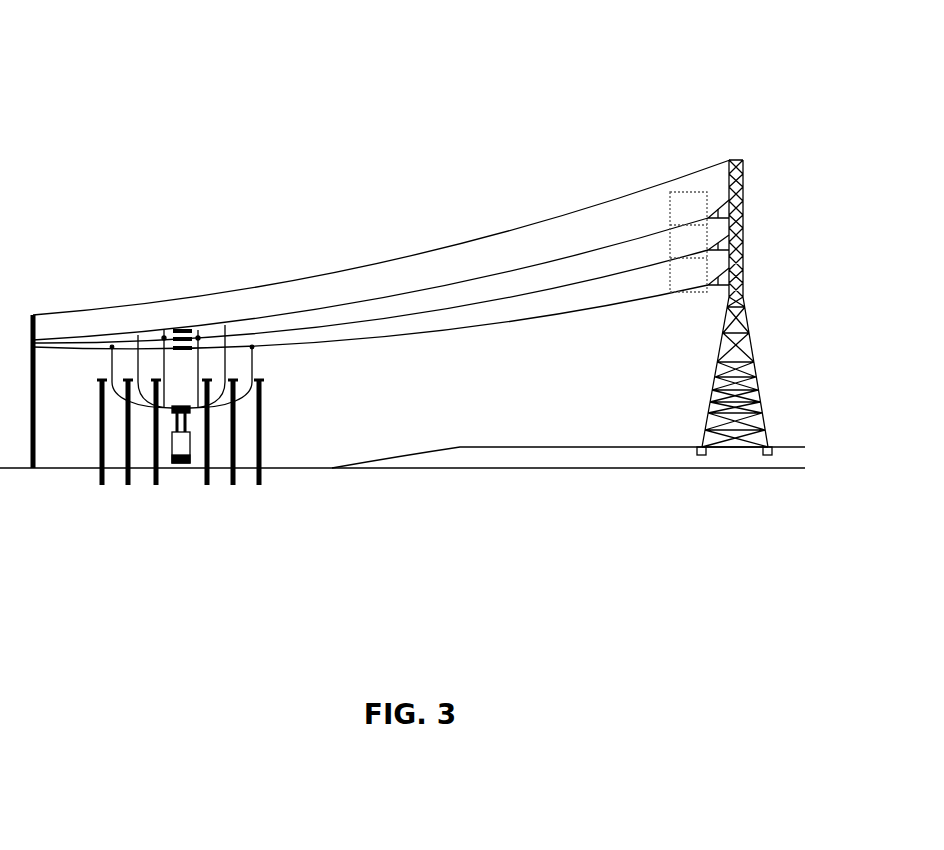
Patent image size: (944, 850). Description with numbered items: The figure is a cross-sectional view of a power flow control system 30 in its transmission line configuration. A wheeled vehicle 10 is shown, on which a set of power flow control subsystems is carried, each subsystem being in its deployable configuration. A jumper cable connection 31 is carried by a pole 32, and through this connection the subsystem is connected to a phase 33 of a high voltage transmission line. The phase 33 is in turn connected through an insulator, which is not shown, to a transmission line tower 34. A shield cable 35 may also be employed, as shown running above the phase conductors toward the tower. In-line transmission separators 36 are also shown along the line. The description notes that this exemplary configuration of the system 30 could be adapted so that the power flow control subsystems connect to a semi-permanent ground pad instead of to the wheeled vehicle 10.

The power flow control system 30 is at (258, 92).
The wheeled vehicle 10 is at (178, 445).
The jumper cable connection 31 is at (253, 358).
The pole 32 is at (262, 412).
The phase 33 is at (633, 300).
The transmission line tower 34 is at (733, 158).
The shield cable 35 is at (508, 230).
The in-line transmission separators 36 is at (183, 332).